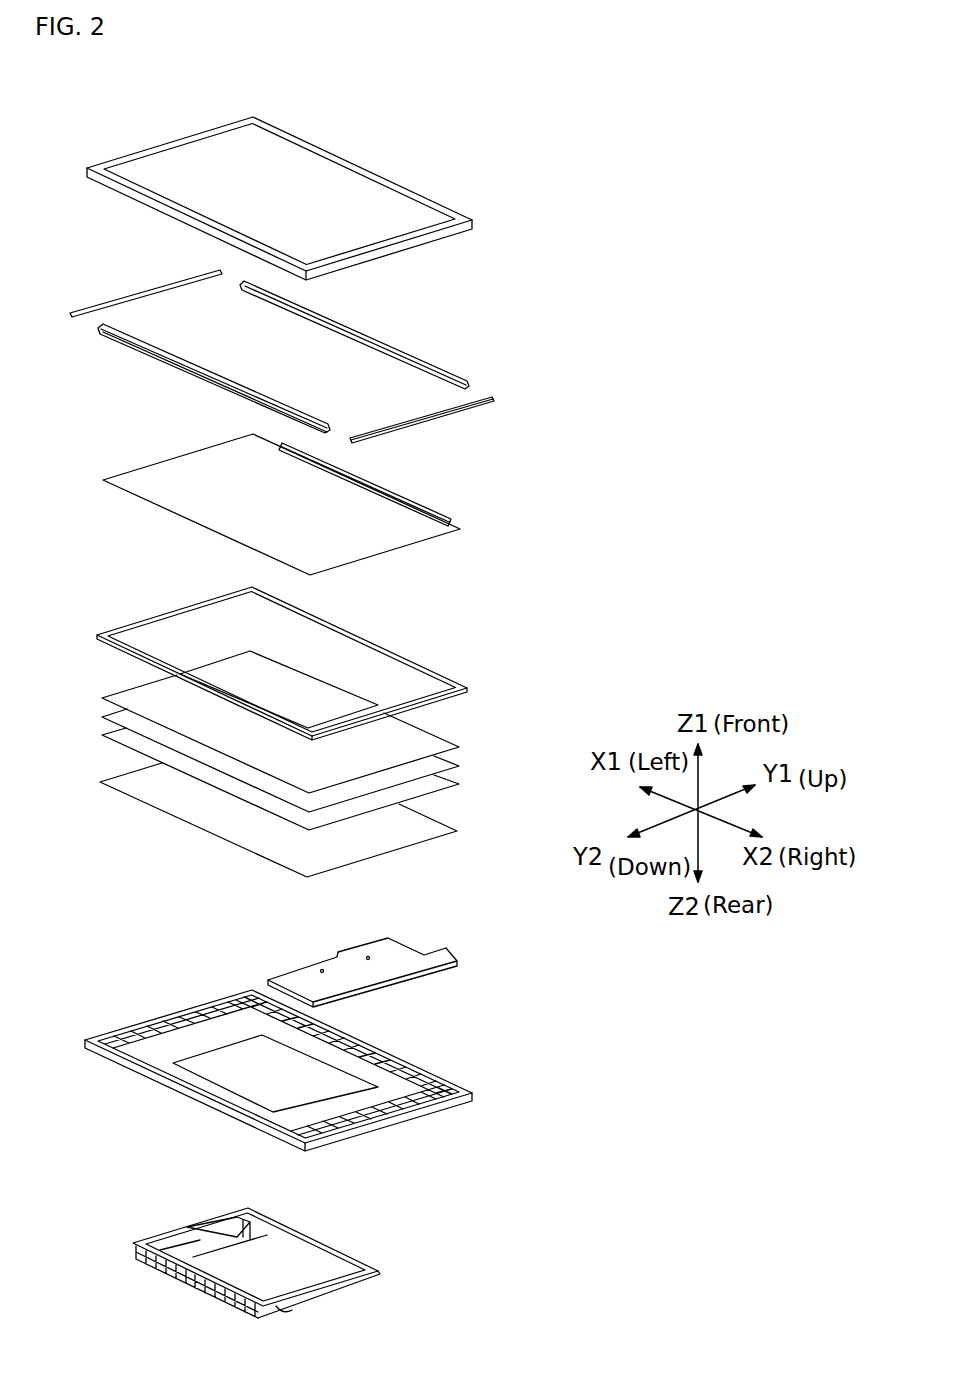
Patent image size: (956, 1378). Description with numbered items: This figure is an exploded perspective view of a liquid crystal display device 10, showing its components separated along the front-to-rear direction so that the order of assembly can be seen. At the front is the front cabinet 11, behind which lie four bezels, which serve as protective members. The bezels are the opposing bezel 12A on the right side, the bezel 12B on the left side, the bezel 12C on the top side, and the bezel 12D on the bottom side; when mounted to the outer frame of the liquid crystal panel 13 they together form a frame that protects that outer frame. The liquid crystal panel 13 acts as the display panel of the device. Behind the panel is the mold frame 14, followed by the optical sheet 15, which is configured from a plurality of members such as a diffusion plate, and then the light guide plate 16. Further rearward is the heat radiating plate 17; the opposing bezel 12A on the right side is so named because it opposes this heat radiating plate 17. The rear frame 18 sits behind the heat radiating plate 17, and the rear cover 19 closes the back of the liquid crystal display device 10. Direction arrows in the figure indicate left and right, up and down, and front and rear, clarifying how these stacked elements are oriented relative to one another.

The liquid crystal display device 10 is at (527, 116).
The front cabinet 11 is at (438, 206).
The opposing bezel 12A is at (466, 411).
The bezel 12B is at (126, 296).
The bezel 12C is at (438, 364).
The bezel 12D is at (146, 360).
The liquid crystal panel 13 is at (458, 528).
The mold frame 14 is at (468, 688).
The optical sheet 15 is at (468, 737).
The light guide plate 16 is at (456, 831).
The heat radiating plate 17 is at (458, 962).
The rear frame 18 is at (470, 1092).
The rear cover 19 is at (330, 1273).